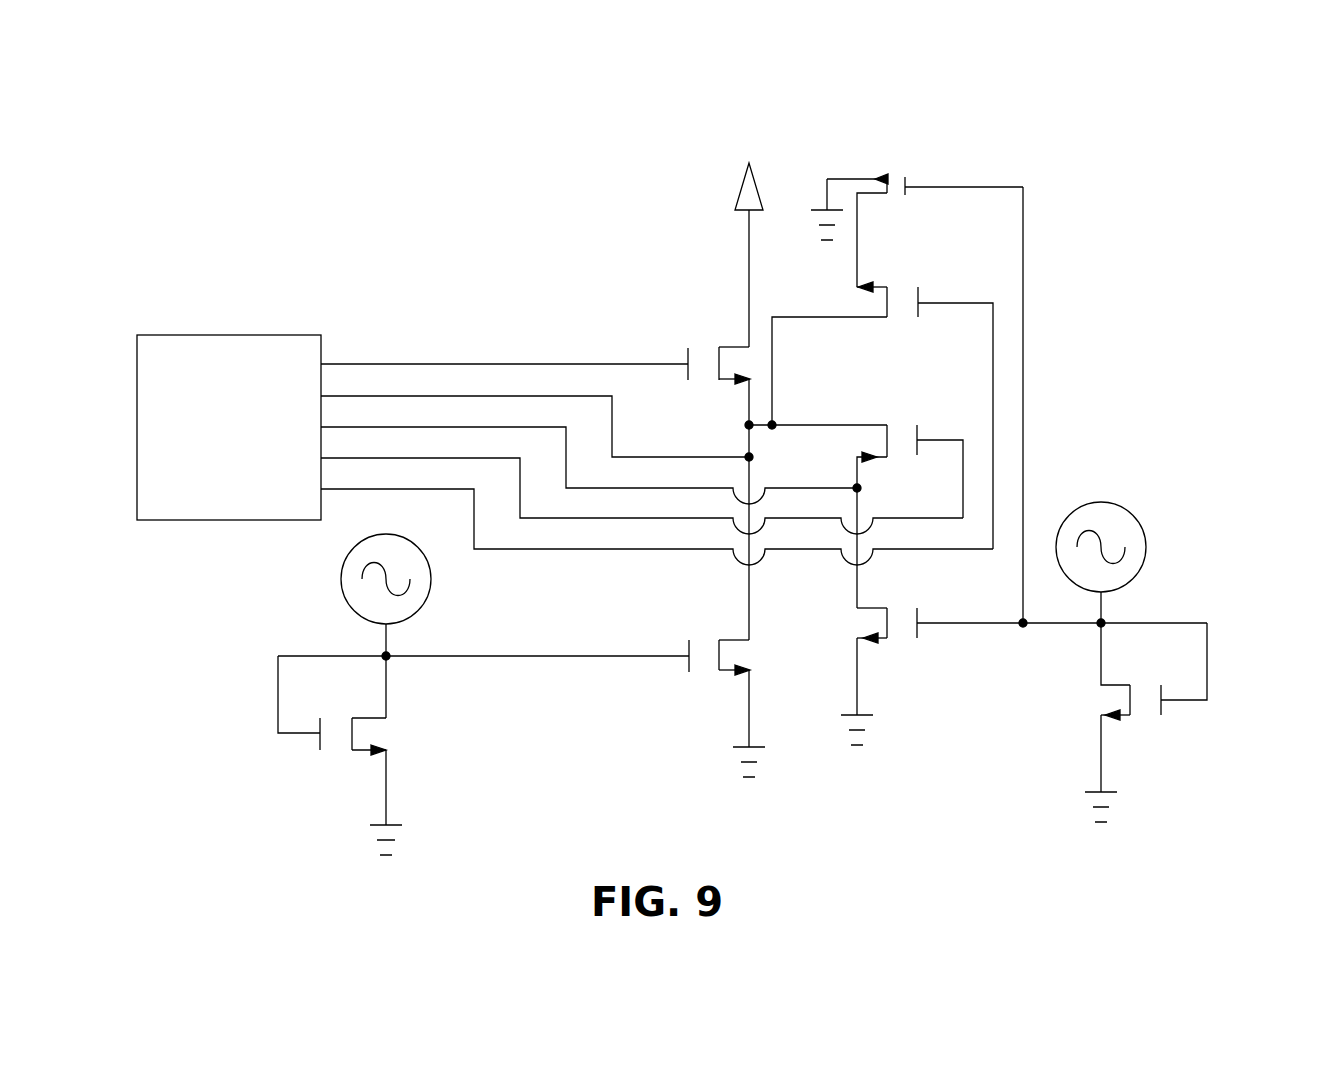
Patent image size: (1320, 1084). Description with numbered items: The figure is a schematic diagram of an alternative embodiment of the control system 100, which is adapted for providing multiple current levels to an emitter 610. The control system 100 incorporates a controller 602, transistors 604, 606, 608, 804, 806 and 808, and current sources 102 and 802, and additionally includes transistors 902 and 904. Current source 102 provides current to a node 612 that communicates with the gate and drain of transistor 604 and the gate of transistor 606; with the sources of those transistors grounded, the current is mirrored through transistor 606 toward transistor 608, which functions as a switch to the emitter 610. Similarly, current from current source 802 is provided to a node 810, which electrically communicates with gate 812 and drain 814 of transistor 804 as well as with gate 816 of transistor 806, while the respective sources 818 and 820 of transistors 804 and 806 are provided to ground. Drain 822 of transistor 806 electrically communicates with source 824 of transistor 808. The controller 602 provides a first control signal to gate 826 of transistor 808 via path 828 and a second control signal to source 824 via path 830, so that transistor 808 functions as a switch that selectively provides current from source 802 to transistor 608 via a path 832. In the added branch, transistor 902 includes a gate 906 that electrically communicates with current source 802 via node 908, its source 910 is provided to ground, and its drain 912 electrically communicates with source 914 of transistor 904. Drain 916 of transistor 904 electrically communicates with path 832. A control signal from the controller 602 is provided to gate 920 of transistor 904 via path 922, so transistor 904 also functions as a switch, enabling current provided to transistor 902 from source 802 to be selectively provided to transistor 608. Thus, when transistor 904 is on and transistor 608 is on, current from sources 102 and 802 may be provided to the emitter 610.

The control system 100 is at (1198, 210).
The current source 102 is at (340, 580).
The controller 602 is at (183, 335).
The transistor 604 is at (305, 767).
The transistor 606 is at (668, 688).
The transistor 608 is at (668, 398).
The emitter 610 is at (757, 185).
The node 612 is at (392, 654).
The current source 802 is at (1147, 548).
The transistor 804 is at (1149, 707).
The transistor 806 is at (901, 640).
The transistor 808 is at (866, 442).
The node 810 is at (1105, 621).
The gate 812 is at (1172, 700).
The drain 814 is at (1115, 683).
The gate 816 is at (935, 625).
The source 818 is at (1112, 713).
The source 820 is at (864, 636).
The drain 822 is at (870, 606).
The source 824 is at (870, 455).
The gate 826 is at (948, 445).
The path 828 is at (643, 518).
The path 830 is at (643, 488).
The path 832 is at (823, 425).
The transistor 902 is at (925, 202).
The transistor 904 is at (883, 389).
The gate 906 is at (917, 187).
The node 908 is at (1022, 620).
The source 910 is at (843, 178).
The drain 912 is at (872, 195).
The source 914 is at (870, 290).
The drain 916 is at (795, 318).
The gate 920 is at (930, 305).
The path 922 is at (643, 549).